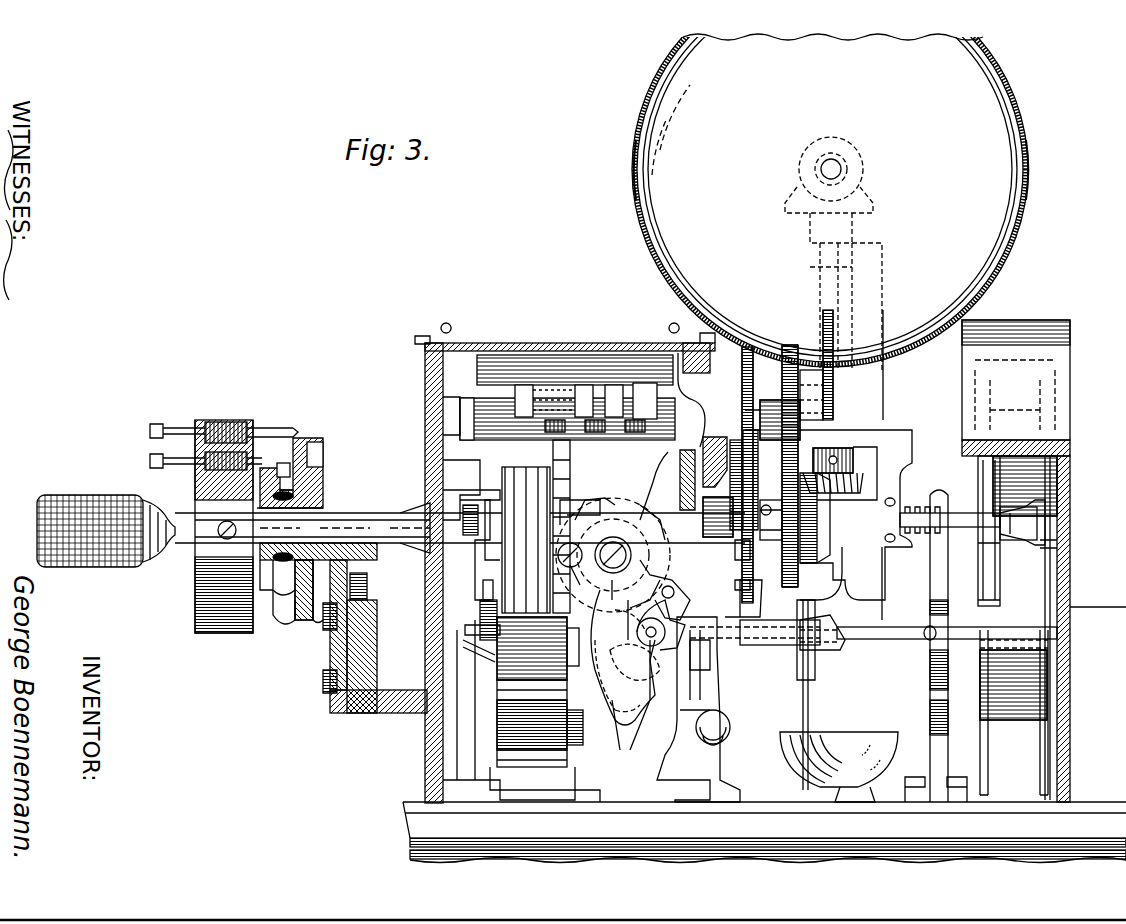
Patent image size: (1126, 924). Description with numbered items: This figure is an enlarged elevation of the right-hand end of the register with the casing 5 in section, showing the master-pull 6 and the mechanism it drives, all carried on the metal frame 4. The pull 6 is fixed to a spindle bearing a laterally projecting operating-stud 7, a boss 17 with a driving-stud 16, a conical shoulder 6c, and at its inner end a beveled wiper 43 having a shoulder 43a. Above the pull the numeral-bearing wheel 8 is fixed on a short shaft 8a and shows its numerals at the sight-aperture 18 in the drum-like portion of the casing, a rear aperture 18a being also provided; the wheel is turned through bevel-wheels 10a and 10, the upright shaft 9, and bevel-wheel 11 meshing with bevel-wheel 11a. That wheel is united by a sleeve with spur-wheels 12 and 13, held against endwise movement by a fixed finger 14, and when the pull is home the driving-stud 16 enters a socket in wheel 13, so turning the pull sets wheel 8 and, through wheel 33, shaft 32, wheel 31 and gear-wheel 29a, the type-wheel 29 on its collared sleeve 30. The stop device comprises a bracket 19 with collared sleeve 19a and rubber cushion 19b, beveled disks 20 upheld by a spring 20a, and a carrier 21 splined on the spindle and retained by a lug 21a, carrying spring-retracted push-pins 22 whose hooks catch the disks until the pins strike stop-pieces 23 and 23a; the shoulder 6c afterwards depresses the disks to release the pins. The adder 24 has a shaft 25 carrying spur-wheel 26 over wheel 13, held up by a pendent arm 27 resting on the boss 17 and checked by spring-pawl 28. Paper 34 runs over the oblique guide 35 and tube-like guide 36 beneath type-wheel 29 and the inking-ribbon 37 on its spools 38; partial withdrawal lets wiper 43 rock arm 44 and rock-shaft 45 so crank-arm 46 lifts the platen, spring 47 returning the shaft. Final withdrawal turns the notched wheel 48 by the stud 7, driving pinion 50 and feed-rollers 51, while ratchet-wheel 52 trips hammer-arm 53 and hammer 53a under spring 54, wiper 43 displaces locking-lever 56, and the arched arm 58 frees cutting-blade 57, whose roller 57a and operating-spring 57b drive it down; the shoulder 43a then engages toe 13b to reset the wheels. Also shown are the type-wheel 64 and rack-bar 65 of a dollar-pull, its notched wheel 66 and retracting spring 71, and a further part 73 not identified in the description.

The metal frame 4 is at (725, 680).
The casing 5 is at (1000, 82).
The master-pull 6 is at (100, 500).
The conical sleeve or shoulder 6c is at (428, 510).
The operating-stud 7 is at (675, 515).
The numeral-bearing wheel 8 is at (830, 183).
The short shaft 8a is at (845, 172).
The upright shaft 9 is at (825, 305).
The bevel-wheel 10 is at (872, 200).
The bevel-wheel 10a is at (858, 155).
The bevel-wheel 11 is at (848, 478).
The bevel-wheel 11a is at (820, 510).
The spur-wheel 12 is at (800, 585).
The spur-wheel 13 is at (755, 632).
The toe or stud 13b is at (905, 512).
The fixed finger 14 is at (765, 640).
The driving-stud 16 is at (718, 517).
The boss 17 is at (748, 505).
The sight-aperture 18 is at (640, 170).
The sight-aperture 18a is at (1030, 170).
The bracket 19 is at (335, 648).
The collared sleeve 19a is at (322, 505).
The rubber cushion or spring 19b is at (322, 488).
The circular disk 20 is at (305, 620).
The spring 20a is at (370, 586).
The circular carrier 21 is at (222, 420).
The lug or finger 21a is at (290, 622).
The push-pins 22 is at (266, 428).
The stop-piece 23 is at (326, 450).
The stop-piece 23a is at (284, 463).
The adder 24 is at (583, 355).
The adder shaft 25 is at (810, 370).
The spur-wheel 26 is at (744, 370).
The pendent arm 27 is at (713, 495).
The spring-pawl 28 is at (745, 352).
The type-wheel 29 is at (552, 470).
The gear-wheel 29a is at (570, 500).
The collared sleeve 30 is at (480, 500).
The wheel 31 is at (560, 390).
The shaft 32 is at (645, 383).
The wheel 33 is at (775, 400).
The roll of paper 34 is at (1040, 552).
The obliquely-arranged guide 35 is at (1070, 650).
The tube-like guide 36 is at (830, 650).
The inking-ribbon 37 is at (515, 665).
The spools 38 is at (512, 767).
The wiper or cam 43 is at (1038, 524).
The shoulder 43a is at (1015, 500).
The arm 44 is at (1000, 570).
The rock-shaft 45 is at (865, 627).
The crank-arm 46 is at (666, 480).
The spring 47 is at (812, 688).
The notched wheel 48 is at (630, 530).
The pinion 50 is at (645, 617).
The feed-rollers 51 is at (625, 695).
The ratchet-wheel 52 is at (622, 535).
The hammer-arm 53 is at (668, 590).
The hammer 53a is at (732, 722).
The spring 54 is at (645, 665).
The locking-lever 56 is at (935, 585).
The cutting-blade 57 is at (490, 600).
The antifriction-roller 57a is at (470, 648).
The operating-spring 57b is at (465, 630).
The arched pivoted arm 58 is at (483, 590).
The type-wheel 64 is at (500, 497).
The rack-bar 65 is at (458, 468).
The wheel 66 is at (700, 400).
The spring 71 is at (920, 528).
The pinion 73 is at (748, 475).